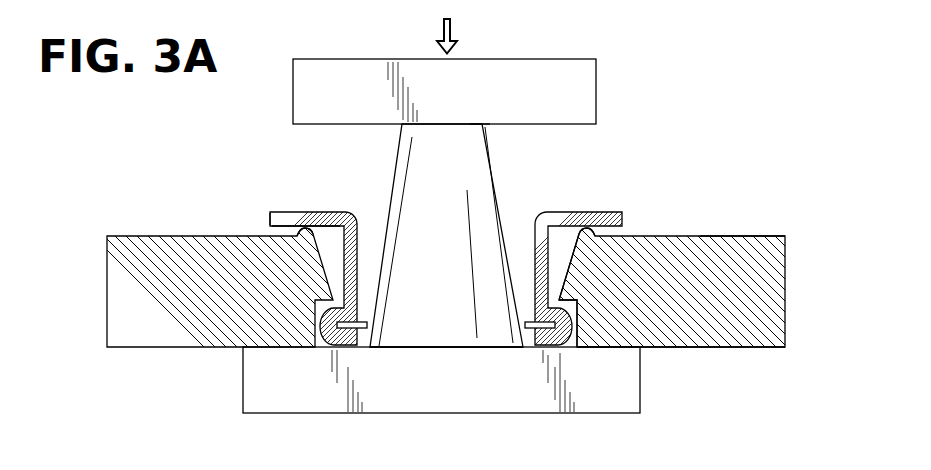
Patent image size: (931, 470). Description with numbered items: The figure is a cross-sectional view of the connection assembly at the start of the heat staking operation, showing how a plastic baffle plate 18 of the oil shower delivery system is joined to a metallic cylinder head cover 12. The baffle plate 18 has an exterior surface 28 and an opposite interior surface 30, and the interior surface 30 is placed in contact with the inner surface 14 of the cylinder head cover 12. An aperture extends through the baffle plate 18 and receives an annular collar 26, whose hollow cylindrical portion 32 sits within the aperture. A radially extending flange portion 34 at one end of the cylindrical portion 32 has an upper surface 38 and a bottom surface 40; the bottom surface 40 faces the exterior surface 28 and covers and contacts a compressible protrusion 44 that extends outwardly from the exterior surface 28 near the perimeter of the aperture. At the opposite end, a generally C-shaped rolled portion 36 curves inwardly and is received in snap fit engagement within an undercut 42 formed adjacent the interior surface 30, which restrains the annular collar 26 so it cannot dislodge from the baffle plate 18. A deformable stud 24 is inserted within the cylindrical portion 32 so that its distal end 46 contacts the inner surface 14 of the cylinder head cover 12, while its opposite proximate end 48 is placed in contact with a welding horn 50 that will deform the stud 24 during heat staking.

The cylinder head cover 12 is at (630, 382).
The inner surface 14 is at (623, 348).
The baffle plate 18 is at (757, 300).
The deformable stud 24 is at (418, 198).
The annular collar 26 is at (628, 203).
The exterior surface 28 is at (757, 236).
The interior surface 30 is at (758, 348).
The cylindrical portion 32 is at (570, 272).
The flange portion 34 is at (268, 219).
The rolled portion 36 is at (556, 328).
The upper surface 38 is at (280, 213).
The bottom surface 40 is at (283, 227).
The undercut 42 is at (573, 308).
The compressible protrusion 44 is at (308, 236).
The distal end 46 is at (416, 349).
The proximate end 48 is at (481, 125).
The welding horn 50 is at (438, 95).